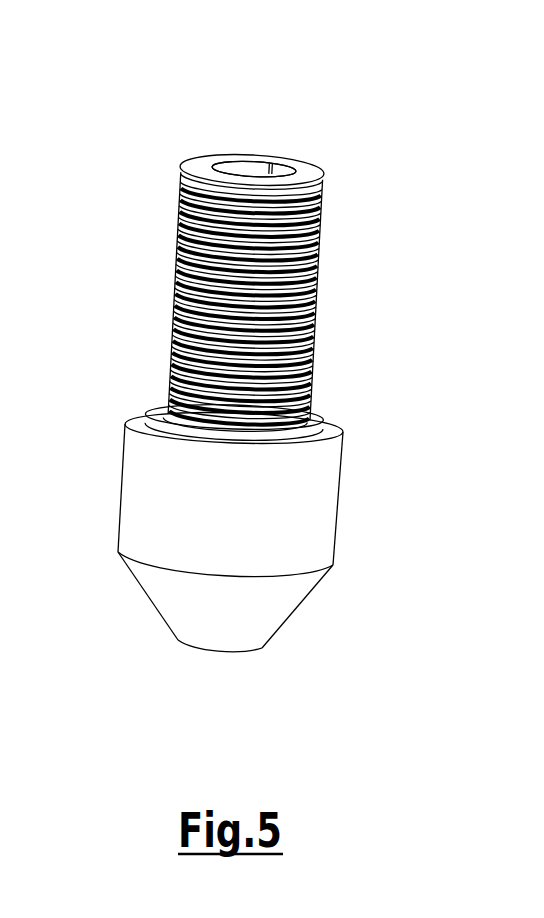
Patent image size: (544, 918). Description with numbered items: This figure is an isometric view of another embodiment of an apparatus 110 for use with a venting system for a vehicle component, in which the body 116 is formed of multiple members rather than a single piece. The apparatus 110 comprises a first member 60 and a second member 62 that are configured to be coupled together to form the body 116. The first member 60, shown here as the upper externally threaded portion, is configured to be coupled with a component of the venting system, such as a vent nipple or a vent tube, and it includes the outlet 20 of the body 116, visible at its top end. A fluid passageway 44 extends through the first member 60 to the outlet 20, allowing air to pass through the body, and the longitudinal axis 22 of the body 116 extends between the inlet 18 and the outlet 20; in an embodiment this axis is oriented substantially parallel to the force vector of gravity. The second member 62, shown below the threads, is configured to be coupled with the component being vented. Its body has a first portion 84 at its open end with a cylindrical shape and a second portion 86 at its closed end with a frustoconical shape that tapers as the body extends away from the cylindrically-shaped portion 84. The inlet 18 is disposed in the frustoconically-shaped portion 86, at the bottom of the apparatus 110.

The apparatus 110 is at (432, 218).
The outlet 20 is at (178, 124).
The body 116 is at (105, 508).
The first member 60 is at (297, 163).
The fluid passageway 44 is at (247, 160).
The longitudinal axis 22 is at (295, 101).
The second member 62 is at (343, 455).
The first portion 84 is at (297, 496).
The second portion 86 is at (163, 583).
The inlet 18 is at (223, 678).